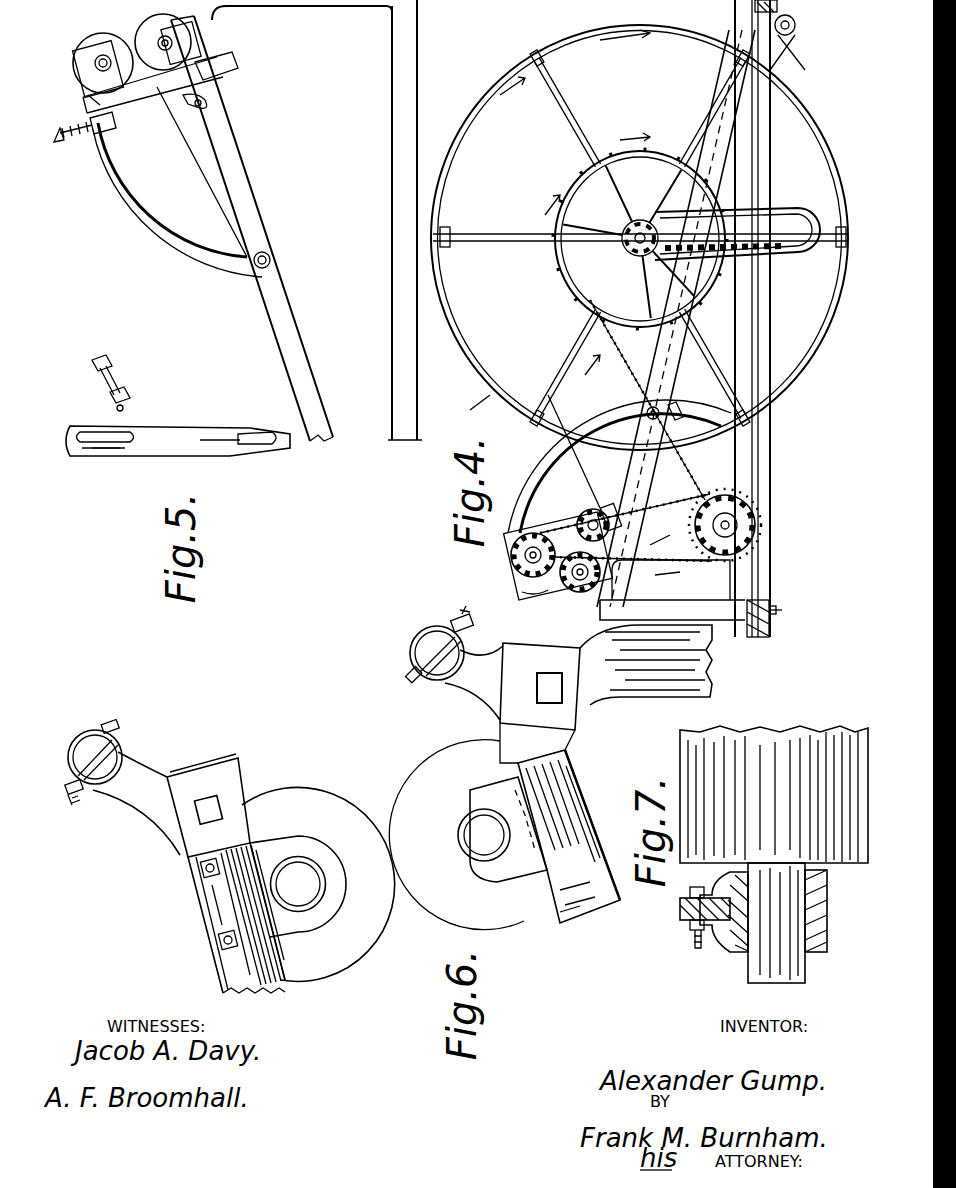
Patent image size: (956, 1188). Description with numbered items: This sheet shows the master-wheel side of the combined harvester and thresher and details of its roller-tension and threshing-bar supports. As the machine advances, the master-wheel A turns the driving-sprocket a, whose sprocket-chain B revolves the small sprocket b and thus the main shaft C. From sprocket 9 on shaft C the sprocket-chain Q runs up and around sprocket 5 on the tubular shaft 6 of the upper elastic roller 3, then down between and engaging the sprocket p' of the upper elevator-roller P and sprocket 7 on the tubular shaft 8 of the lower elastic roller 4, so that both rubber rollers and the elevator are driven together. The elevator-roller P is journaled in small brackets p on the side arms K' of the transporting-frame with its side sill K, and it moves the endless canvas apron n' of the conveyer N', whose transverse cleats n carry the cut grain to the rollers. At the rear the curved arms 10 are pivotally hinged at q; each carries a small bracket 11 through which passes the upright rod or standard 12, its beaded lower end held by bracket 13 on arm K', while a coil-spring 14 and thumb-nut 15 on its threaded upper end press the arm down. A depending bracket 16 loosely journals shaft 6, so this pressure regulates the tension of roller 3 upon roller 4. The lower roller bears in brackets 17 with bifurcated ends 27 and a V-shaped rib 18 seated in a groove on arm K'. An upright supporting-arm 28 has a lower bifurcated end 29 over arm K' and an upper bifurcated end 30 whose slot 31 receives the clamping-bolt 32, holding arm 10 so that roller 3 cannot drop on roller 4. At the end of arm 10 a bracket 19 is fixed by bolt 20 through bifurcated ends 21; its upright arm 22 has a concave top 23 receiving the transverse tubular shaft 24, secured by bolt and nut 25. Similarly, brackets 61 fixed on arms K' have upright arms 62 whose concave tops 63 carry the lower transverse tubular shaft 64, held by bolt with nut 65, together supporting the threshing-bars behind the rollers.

In FIG. 4, the master-wheel A is at (639, 225).
In FIG. 4, the sprocket-chain B is at (648, 160).
In FIG. 4, the driving-sprocket a is at (640, 310).
In FIG. 4, the transverse slats or cleats n is at (756, 83).
In FIG. 4, the cord o is at (789, 52).
In FIG. 4, the connecting rod N' is at (676, 318).
In FIG. 4, the endless canvas apron or belt n' is at (636, 375).
In FIG. 4, the pivotal hinge q is at (671, 415).
In FIG. 4, the side sill K is at (497, 318).
In FIG. 4, the side arms K' is at (672, 550).
In FIG. 5, the side arms K' is at (252, 228).
In FIG. 6, the side arms K' is at (610, 792).
In FIG. 4, the curved arm 10 is at (546, 488).
In FIG. 5, the curved arm 10 is at (177, 182).
In FIG. 6, the curved arm 10 is at (225, 982).
In FIG. 7, the curved arm 10 is at (680, 908).
In FIG. 4, the sprocket 5 is at (520, 528).
In FIG. 5, the sprocket 5 is at (162, 38).
In FIG. 4, the tubular shaft 6 is at (525, 555).
In FIG. 5, the tubular shaft 6 is at (106, 56).
In FIG. 6, the tubular shaft 6 is at (298, 884).
In FIG. 7, the tubular shaft 6 is at (776, 923).
In FIG. 4, the sprocket 7 is at (539, 594).
In FIG. 4, the tubular shaft or core 8 is at (584, 575).
In FIG. 6, the tubular shaft or core 8 is at (484, 835).
In FIG. 4, the sprocket 9 is at (625, 522).
In FIG. 5, the sprocket 9 is at (270, 258).
In FIG. 4, the upper elevator-roller P is at (578, 524).
In FIG. 4, the pinion bracket P' is at (592, 500).
In FIG. 4, the brackets or bearings p is at (581, 451).
In FIG. 4, the main shaft C is at (740, 518).
In FIG. 4, the small sprocket b is at (722, 492).
In FIG. 4, the sprocket-chain Q is at (632, 551).
In FIG. 5, the upper elastic roller 3 is at (103, 63).
In FIG. 6, the upper elastic roller 3 is at (318, 884).
In FIG. 7, the upper elastic roller 3 is at (774, 794).
In FIG. 5, the lower elastic roller 4 is at (163, 42).
In FIG. 6, the lower elastic roller 4 is at (456, 835).
In FIG. 5, the bifurcated ends 27 is at (198, 30).
In FIG. 5, the upright rod or standard 12 is at (160, 92).
In FIG. 5, the lower bifurcated end 29 is at (214, 70).
In FIG. 5, the bracket 13 is at (198, 110).
In FIG. 5, the upright brace or supporting-arm 28 is at (157, 90).
In FIG. 5, the upper bifurcated end 30 is at (79, 288).
In FIG. 5, the slot 31 is at (120, 455).
In FIG. 5, the clamping-bolt 32 is at (98, 106).
In FIG. 5, the bracket 11 is at (112, 130).
In FIG. 5, the coil-spring 14 is at (92, 135).
In FIG. 5, the thumb-nut 15 is at (60, 140).
In FIG. 6, the bracket 16 is at (324, 848).
In FIG. 7, the bracket 16 is at (822, 952).
In FIG. 6, the bracket 19 is at (182, 850).
In FIG. 6, the bolt 20 is at (205, 798).
In FIG. 6, the bifurcated ends 21 is at (236, 782).
In FIG. 6, the upright arm 22 is at (136, 803).
In FIG. 6, the top 23 is at (68, 745).
In FIG. 6, the transverse tubular shaft 24 is at (122, 752).
In FIG. 6, the bolt and nut 25 is at (78, 800).
In FIG. 6, the brackets 17 is at (512, 865).
In FIG. 6, the V-shaped flange or rib 18 is at (560, 800).
In FIG. 6, the brackets 61 is at (500, 712).
In FIG. 6, the upright arms 62 is at (474, 683).
In FIG. 6, the tops 63 is at (435, 635).
In FIG. 6, the lower transverse tubular shaft 64 is at (415, 640).
In FIG. 6, the bolt with nut 65 is at (470, 630).